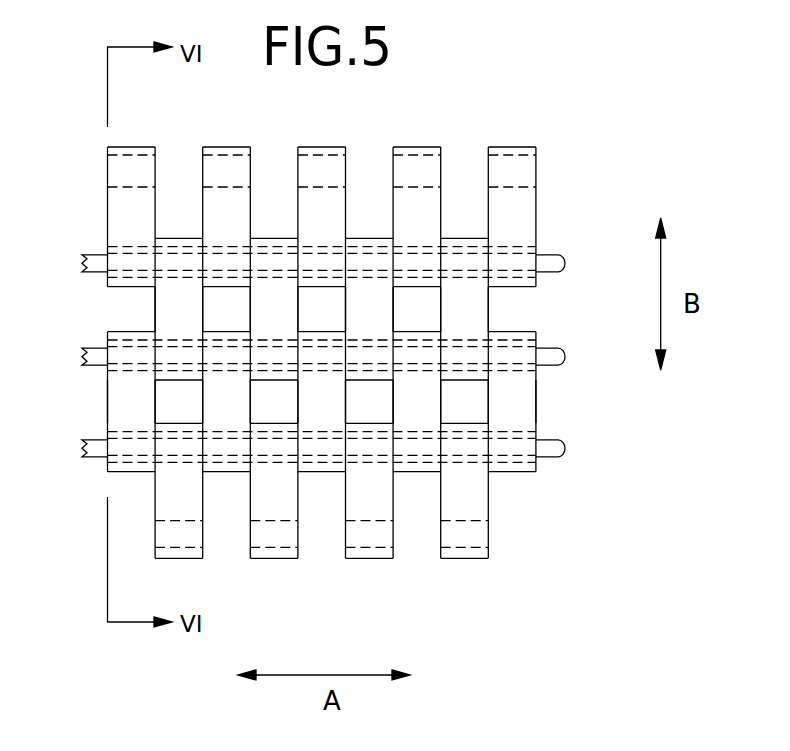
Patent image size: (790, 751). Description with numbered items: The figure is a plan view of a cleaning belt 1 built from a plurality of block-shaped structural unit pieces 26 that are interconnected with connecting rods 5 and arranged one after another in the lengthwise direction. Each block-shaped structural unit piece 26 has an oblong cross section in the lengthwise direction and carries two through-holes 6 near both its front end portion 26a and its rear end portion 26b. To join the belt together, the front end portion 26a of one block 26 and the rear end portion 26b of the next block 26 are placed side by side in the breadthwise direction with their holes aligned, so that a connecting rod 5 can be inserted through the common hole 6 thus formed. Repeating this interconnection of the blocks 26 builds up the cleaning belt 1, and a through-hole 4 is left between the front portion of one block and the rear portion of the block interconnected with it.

The cleaning belt 1 is at (332, 562).
The through-hole 4 is at (215, 315).
The connecting rod 5 is at (80, 258).
The through-hole 6 is at (108, 178).
The block-shaped structural unit piece 26 is at (137, 147).
The front end portion 26a is at (108, 147).
The rear end portion 26b is at (108, 285).